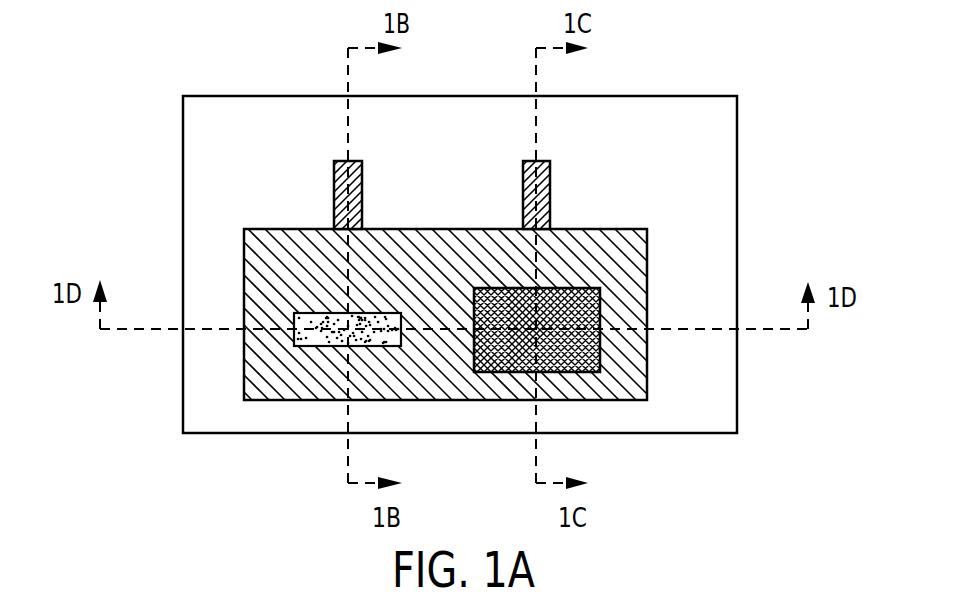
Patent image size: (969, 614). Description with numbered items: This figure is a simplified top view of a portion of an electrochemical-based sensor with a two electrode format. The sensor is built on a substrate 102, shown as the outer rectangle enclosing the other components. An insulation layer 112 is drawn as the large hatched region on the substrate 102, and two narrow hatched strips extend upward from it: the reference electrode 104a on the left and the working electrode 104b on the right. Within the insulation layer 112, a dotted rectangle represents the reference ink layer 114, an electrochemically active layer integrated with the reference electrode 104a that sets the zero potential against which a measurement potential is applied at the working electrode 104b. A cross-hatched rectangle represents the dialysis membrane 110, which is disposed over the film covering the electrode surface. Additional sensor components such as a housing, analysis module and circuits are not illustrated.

The substrate 102 is at (737, 195).
The insulation layer 112 is at (244, 253).
The reference electrode 104a is at (334, 170).
The working electrode 104b is at (552, 177).
The reference ink layer 114 is at (317, 335).
The dialysis membrane 110 is at (588, 357).